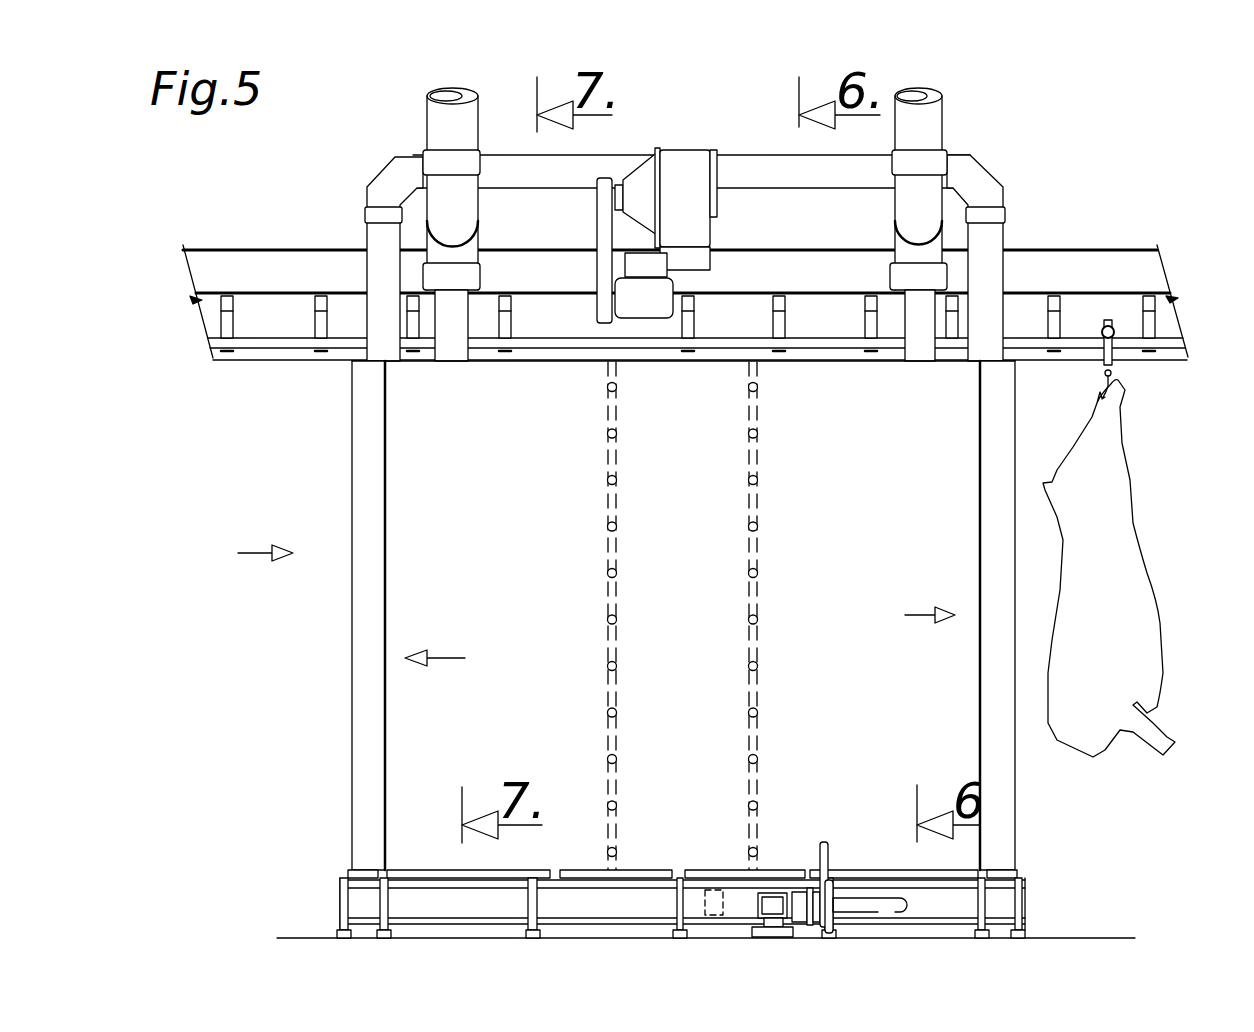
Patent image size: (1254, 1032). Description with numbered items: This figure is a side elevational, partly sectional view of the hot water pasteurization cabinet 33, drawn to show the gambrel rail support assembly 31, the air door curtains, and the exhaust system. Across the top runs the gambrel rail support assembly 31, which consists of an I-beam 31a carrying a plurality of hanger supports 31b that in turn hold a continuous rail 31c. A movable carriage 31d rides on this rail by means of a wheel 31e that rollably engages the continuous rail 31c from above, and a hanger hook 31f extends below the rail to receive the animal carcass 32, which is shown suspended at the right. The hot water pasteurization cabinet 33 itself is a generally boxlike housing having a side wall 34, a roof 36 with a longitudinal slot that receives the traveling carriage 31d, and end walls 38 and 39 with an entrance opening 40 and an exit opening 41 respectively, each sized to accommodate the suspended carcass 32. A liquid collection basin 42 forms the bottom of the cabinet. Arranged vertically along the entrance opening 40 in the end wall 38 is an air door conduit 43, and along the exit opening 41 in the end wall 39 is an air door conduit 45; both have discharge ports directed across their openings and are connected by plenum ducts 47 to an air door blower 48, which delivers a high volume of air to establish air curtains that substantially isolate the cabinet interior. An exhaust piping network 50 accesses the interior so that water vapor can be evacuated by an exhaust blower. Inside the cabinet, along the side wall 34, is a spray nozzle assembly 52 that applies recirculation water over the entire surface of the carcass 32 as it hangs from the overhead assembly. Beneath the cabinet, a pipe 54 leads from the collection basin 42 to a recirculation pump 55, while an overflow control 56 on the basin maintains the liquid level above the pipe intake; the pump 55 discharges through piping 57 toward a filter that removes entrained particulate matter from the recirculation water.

The gambrel rail support assembly 31 is at (1162, 201).
The I-beam 31a is at (257, 273).
The hanger supports 31b is at (320, 320).
The continuous rail 31c is at (248, 344).
The movable carriage 31d is at (1110, 352).
The wheel 31e is at (1115, 328).
The hanger hook 31f is at (1102, 390).
The animal carcass 32 is at (1100, 607).
The hot water pasteurization cabinet 33 is at (246, 557).
The side wall 34 is at (683, 615).
The roof 36 is at (535, 362).
The end wall 38 is at (978, 547).
The end wall 39 is at (385, 488).
The entrance opening 40 is at (910, 618).
The exit opening 41 is at (451, 658).
The liquid collection basin 42 is at (595, 897).
The air door conduit 43 is at (983, 437).
The air door conduit 45 is at (367, 738).
The plenum ducts 47 is at (383, 248).
The air door blower 48 is at (687, 217).
The exhaust piping network 50 is at (448, 133).
The spray nozzle assembly 52 is at (753, 603).
The pipe 54 is at (870, 905).
The recirculation pump 55 is at (771, 905).
The overflow control 56 is at (688, 884).
The piping 57 is at (832, 857).